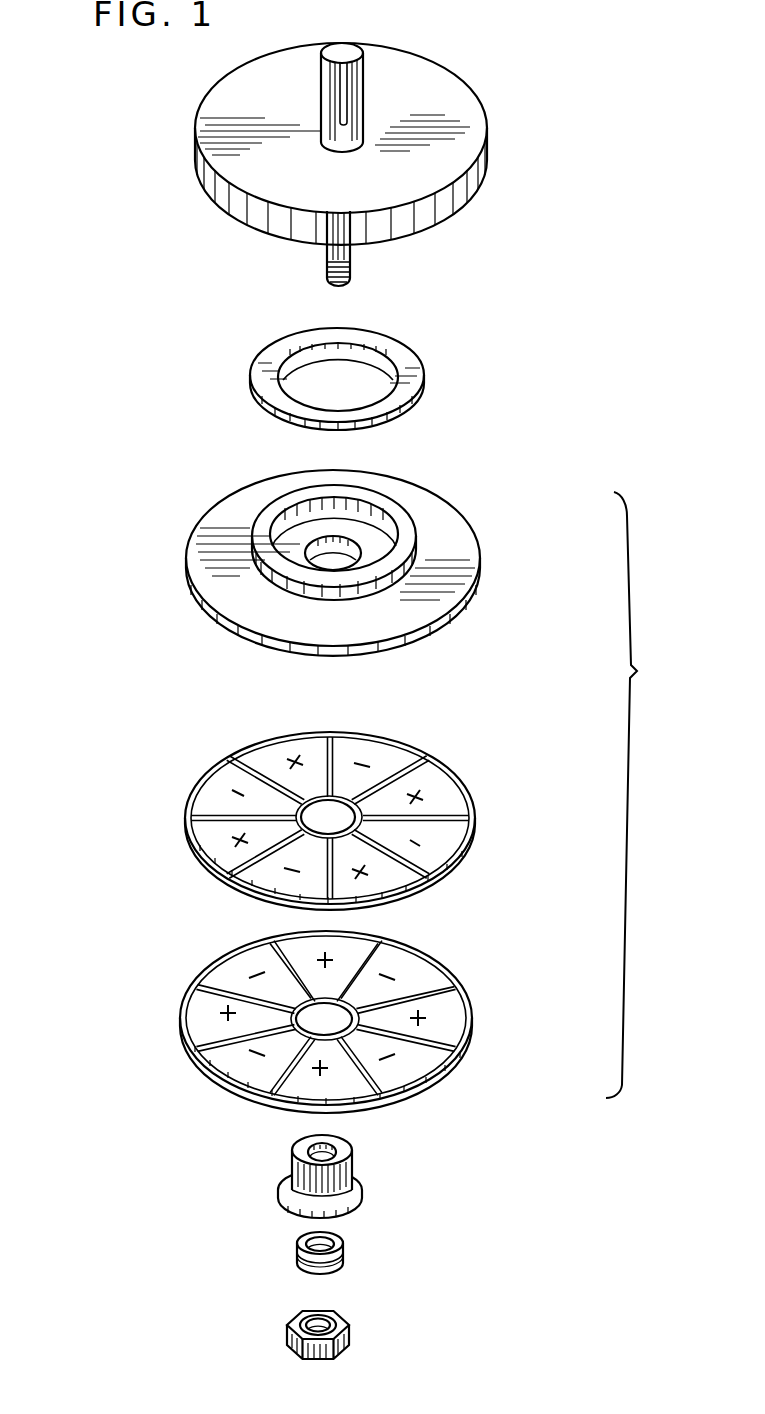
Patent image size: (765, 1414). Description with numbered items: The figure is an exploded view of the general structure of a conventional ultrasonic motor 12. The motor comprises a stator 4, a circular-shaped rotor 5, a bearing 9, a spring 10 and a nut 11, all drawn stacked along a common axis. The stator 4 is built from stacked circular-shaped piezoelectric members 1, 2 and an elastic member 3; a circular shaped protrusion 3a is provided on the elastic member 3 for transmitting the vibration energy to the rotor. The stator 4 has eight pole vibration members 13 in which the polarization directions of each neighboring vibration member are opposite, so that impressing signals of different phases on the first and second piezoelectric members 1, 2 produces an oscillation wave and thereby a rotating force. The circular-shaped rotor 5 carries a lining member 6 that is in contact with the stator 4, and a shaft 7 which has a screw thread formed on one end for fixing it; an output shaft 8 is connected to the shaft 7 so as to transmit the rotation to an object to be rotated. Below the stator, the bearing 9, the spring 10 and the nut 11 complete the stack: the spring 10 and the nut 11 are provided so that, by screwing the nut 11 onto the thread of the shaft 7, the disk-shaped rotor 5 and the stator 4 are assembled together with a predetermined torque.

The first piezoelectric member 1 is at (192, 853).
The second piezoelectric member 2 is at (180, 1020).
The elastic member 3 is at (264, 608).
The circular shaped protrusion 3a is at (415, 530).
The stator 4 is at (633, 795).
The rotor 5 is at (470, 120).
The lining member 6 is at (420, 378).
The shaft 7 is at (327, 270).
The output shaft 8 is at (322, 113).
The bearing 9 is at (357, 1175).
The spring 10 is at (343, 1255).
The nut 11 is at (347, 1328).
The ultrasonic motor 12 is at (312, 540).
The vibration members 13 is at (443, 790).